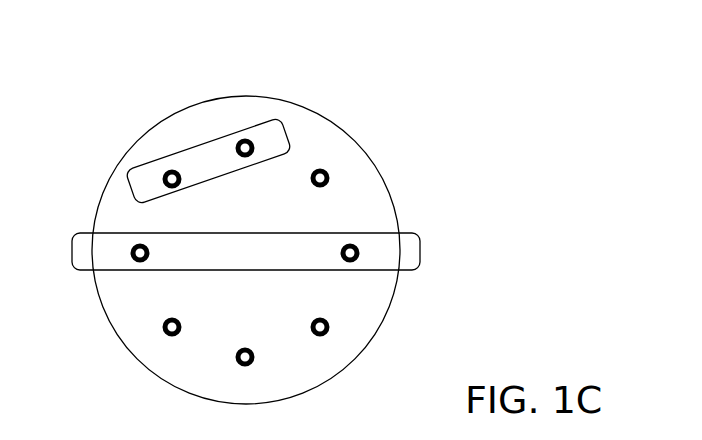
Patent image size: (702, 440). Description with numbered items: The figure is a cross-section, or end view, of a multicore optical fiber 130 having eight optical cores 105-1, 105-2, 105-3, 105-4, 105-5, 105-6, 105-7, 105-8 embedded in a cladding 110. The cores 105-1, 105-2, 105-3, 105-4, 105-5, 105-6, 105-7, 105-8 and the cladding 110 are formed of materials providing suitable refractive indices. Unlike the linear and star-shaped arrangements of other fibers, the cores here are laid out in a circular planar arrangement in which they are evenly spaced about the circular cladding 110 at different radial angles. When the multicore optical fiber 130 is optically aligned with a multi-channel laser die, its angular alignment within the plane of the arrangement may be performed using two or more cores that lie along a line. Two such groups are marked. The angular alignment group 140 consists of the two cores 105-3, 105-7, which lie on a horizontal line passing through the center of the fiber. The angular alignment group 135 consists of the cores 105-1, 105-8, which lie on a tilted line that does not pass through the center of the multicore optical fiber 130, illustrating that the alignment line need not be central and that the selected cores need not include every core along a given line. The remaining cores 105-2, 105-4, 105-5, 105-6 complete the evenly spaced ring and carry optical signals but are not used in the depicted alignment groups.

The cladding 110 is at (390, 195).
The multicore optical fiber 130 is at (365, 115).
The angular alignment group 135 is at (205, 184).
The angular alignment group 140 is at (418, 242).
The optical core 105-1 is at (245, 139).
The optical core 105-2 is at (319, 169).
The optical core 105-3 is at (356, 260).
The optical core 105-4 is at (328, 333).
The optical core 105-5 is at (238, 366).
The optical core 105-6 is at (166, 336).
The optical core 105-7 is at (135, 248).
The optical core 105-8 is at (166, 173).